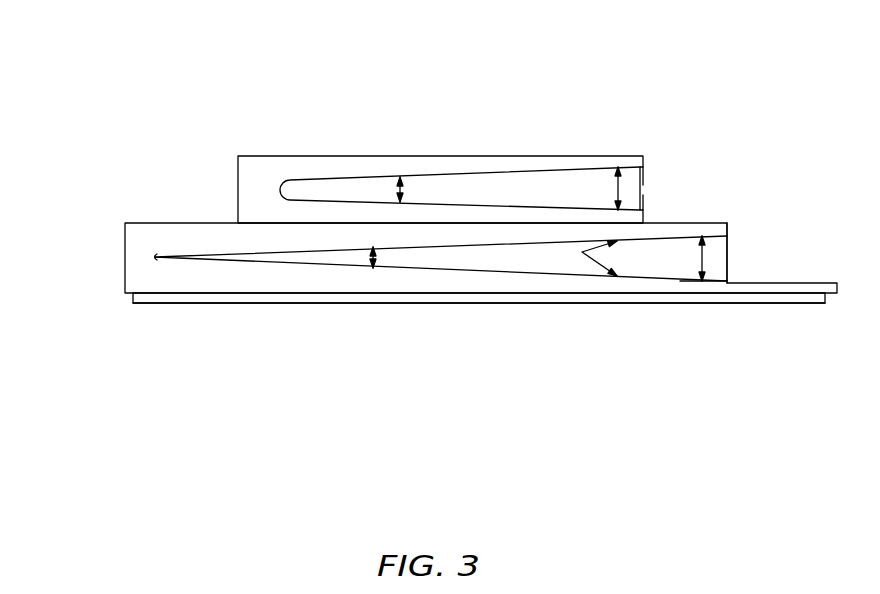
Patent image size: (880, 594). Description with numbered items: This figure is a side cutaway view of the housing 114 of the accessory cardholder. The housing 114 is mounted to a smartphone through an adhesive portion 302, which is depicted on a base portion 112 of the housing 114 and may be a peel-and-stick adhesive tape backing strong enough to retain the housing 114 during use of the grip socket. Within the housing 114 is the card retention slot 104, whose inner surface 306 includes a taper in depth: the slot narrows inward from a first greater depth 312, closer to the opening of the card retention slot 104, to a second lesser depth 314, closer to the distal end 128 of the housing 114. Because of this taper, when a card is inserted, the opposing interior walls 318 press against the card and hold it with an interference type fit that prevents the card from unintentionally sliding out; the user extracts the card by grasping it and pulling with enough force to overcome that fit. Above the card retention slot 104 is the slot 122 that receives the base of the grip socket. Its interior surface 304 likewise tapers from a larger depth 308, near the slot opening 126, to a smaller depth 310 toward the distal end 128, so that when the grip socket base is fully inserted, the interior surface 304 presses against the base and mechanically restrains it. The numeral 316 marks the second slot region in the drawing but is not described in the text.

The housing 114 is at (240, 92).
The distal end 128 is at (122, 205).
The base portion 112 is at (128, 295).
The adhesive portion 302 is at (208, 297).
The larger depth 308 is at (630, 178).
The smaller depth 310 is at (413, 190).
The interior surface 304 is at (555, 170).
The slot 122 is at (643, 185).
The slot opening 126 is at (643, 205).
The second slot 316 is at (488, 243).
The second lesser depth 314 is at (376, 256).
The opposing interior walls 318 is at (582, 252).
The inner surface 306 is at (658, 236).
The first greater depth 312 is at (702, 255).
The card retention slot 104 is at (733, 248).